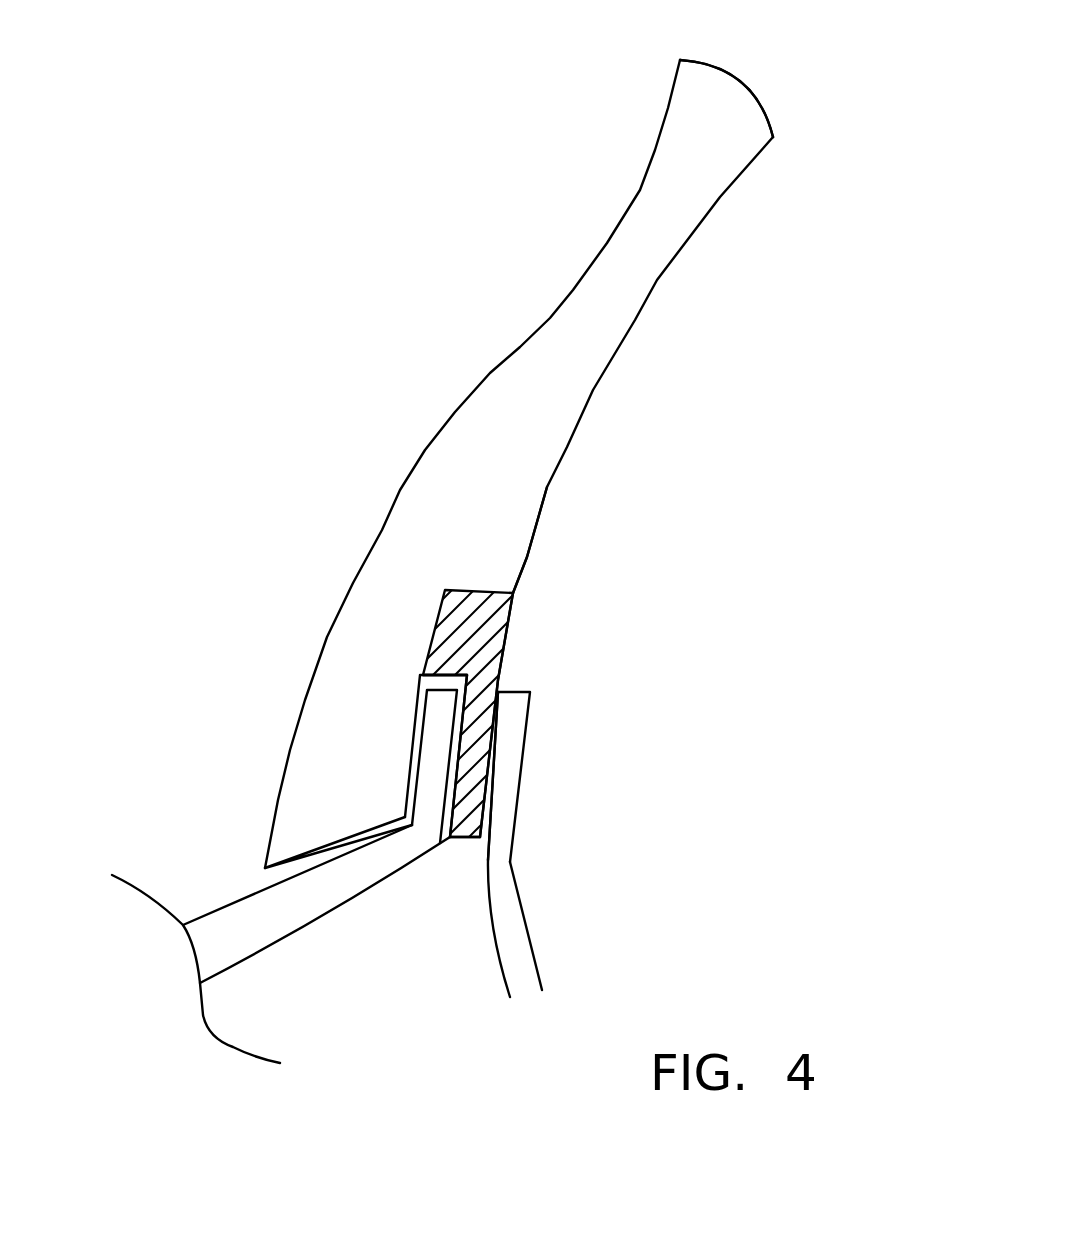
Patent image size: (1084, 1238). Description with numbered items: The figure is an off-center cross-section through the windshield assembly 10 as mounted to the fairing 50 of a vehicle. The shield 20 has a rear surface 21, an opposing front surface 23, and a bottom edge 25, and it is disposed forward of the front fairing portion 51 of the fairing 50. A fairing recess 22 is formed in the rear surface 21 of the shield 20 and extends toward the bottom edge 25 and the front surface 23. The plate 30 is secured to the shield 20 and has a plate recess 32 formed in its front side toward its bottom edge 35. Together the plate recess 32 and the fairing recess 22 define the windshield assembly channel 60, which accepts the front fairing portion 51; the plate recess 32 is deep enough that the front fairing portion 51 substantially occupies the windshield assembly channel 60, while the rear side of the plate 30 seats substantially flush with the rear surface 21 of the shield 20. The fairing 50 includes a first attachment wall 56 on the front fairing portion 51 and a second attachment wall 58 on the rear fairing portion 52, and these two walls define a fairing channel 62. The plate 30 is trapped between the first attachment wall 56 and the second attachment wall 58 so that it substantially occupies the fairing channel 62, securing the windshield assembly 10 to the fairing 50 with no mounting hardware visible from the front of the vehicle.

The windshield assembly 10 is at (330, 202).
The shield 20 is at (556, 434).
The rear surface 21 is at (723, 197).
The fairing recess 22 is at (523, 557).
The front surface 23 is at (655, 150).
The bottom edge 25 is at (313, 847).
The plate 30 is at (468, 704).
The plate recess 32 is at (497, 660).
The bottom edge 35 is at (463, 838).
The fairing 50 is at (370, 869).
The front fairing portion 51 is at (237, 891).
The rear fairing portion 52 is at (512, 817).
The first attachment wall 56 is at (412, 753).
The second attachment wall 58 is at (530, 713).
The windshield assembly channel 60 is at (437, 687).
The fairing channel 62 is at (490, 766).